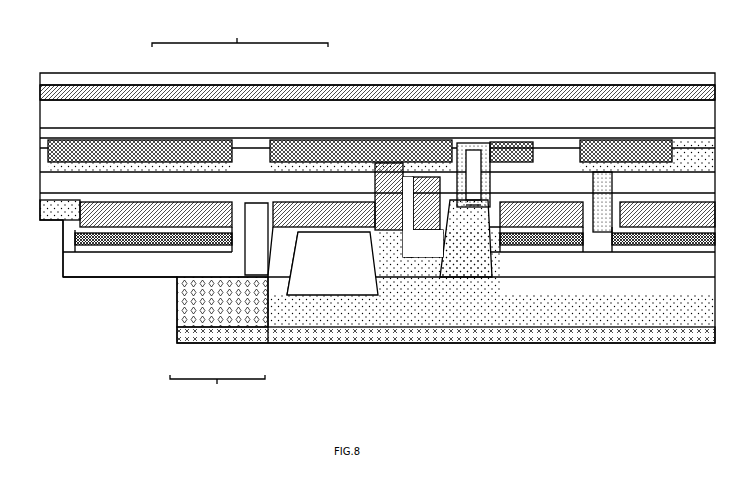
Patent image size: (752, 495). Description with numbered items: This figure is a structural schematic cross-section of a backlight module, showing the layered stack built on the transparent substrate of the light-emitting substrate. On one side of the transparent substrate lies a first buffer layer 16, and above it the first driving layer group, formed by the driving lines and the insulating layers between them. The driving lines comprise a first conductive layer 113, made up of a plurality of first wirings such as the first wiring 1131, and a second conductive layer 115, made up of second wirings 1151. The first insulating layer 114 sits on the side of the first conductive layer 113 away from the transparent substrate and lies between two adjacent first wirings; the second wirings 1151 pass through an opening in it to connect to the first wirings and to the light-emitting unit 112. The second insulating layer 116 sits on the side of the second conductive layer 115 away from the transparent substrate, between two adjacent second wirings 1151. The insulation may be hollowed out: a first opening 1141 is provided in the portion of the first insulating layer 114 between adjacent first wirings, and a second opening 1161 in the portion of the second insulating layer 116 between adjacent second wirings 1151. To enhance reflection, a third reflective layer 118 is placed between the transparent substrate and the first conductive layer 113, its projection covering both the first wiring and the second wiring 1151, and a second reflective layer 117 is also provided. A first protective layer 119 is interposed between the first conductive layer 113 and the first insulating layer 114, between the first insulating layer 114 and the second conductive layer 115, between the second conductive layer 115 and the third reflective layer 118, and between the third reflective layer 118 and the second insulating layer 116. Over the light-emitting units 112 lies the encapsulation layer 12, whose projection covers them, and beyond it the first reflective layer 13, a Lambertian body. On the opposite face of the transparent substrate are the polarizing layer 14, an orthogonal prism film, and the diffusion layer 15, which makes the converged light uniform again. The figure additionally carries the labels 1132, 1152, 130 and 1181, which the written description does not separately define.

The encapsulation layer 12 is at (712, 330).
The first reflective layer 13 is at (670, 343).
The polarizing layer 14 is at (427, 78).
The diffusion layer 15 is at (470, 92).
The first buffer layer 16 is at (360, 137).
The light-emitting unit 112 is at (328, 280).
The first conductive layer 113 is at (342, 94).
The first wiring 1131 is at (146, 146).
The second gate electrode 1132 is at (294, 140).
The first insulating layer 114 is at (637, 190).
The second conductive layer 115 is at (217, 385).
The second wiring 1151 is at (181, 345).
The drain electrode 1152 is at (266, 345).
The second insulating layer 116 is at (621, 268).
The second reflective layer 117 is at (513, 108).
The third reflective layer 118 is at (97, 252).
The first protective layer 119 is at (600, 175).
The passivation layer 130 is at (545, 172).
The first opening 1141 is at (478, 185).
The second opening 1161 is at (58, 268).
The contact hole 1181 is at (480, 262).